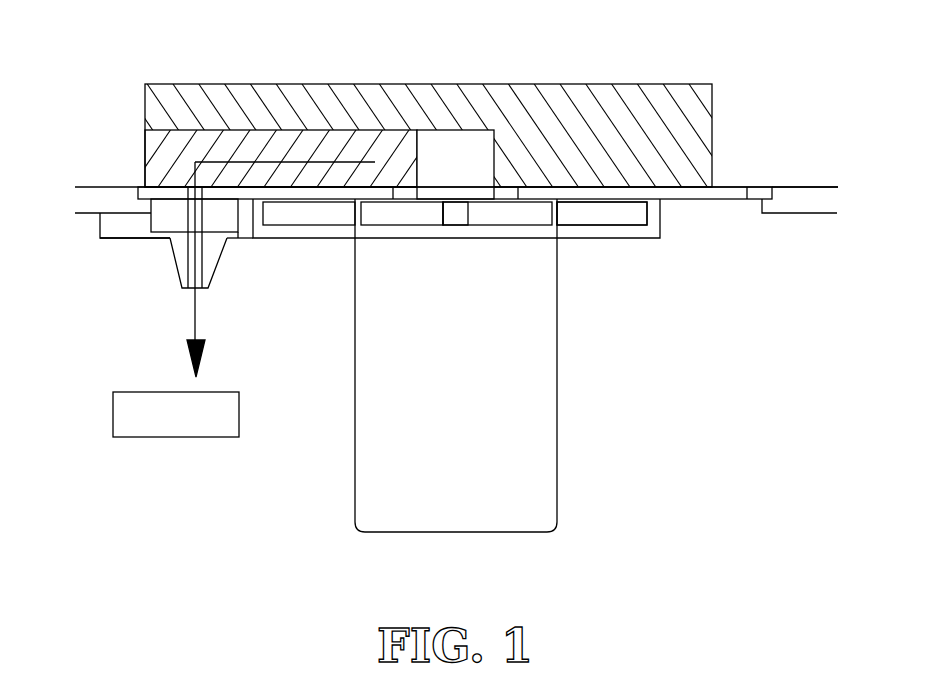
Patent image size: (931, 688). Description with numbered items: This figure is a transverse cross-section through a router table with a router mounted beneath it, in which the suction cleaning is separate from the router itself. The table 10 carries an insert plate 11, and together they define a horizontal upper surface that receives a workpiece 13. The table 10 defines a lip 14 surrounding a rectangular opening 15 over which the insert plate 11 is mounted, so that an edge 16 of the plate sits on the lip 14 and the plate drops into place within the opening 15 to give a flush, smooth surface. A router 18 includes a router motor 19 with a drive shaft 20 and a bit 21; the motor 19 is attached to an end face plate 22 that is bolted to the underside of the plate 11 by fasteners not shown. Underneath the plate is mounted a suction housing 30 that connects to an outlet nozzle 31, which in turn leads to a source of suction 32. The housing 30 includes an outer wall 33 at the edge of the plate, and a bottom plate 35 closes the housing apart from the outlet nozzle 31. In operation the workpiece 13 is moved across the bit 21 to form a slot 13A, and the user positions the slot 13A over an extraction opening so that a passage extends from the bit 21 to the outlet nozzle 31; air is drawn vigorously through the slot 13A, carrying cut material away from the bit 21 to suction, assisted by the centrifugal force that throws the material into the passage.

The table 10 is at (113, 200).
The insert plate 11 is at (748, 197).
The workpiece 13 is at (328, 85).
The slot 13A is at (175, 148).
The lip 14 is at (770, 212).
The rectangular opening 15 is at (687, 203).
The edge of the plate 16 is at (777, 195).
The router 18 is at (517, 405).
The router motor 19 is at (442, 474).
The drive shaft 20 is at (455, 212).
The bit 21 is at (455, 162).
The end face plate 22 is at (647, 242).
The suction housing 30 is at (113, 228).
The outlet nozzle 31 is at (183, 250).
The source of suction 32 is at (177, 430).
The outer wall 33 is at (97, 225).
The bottom plate 35 is at (125, 238).